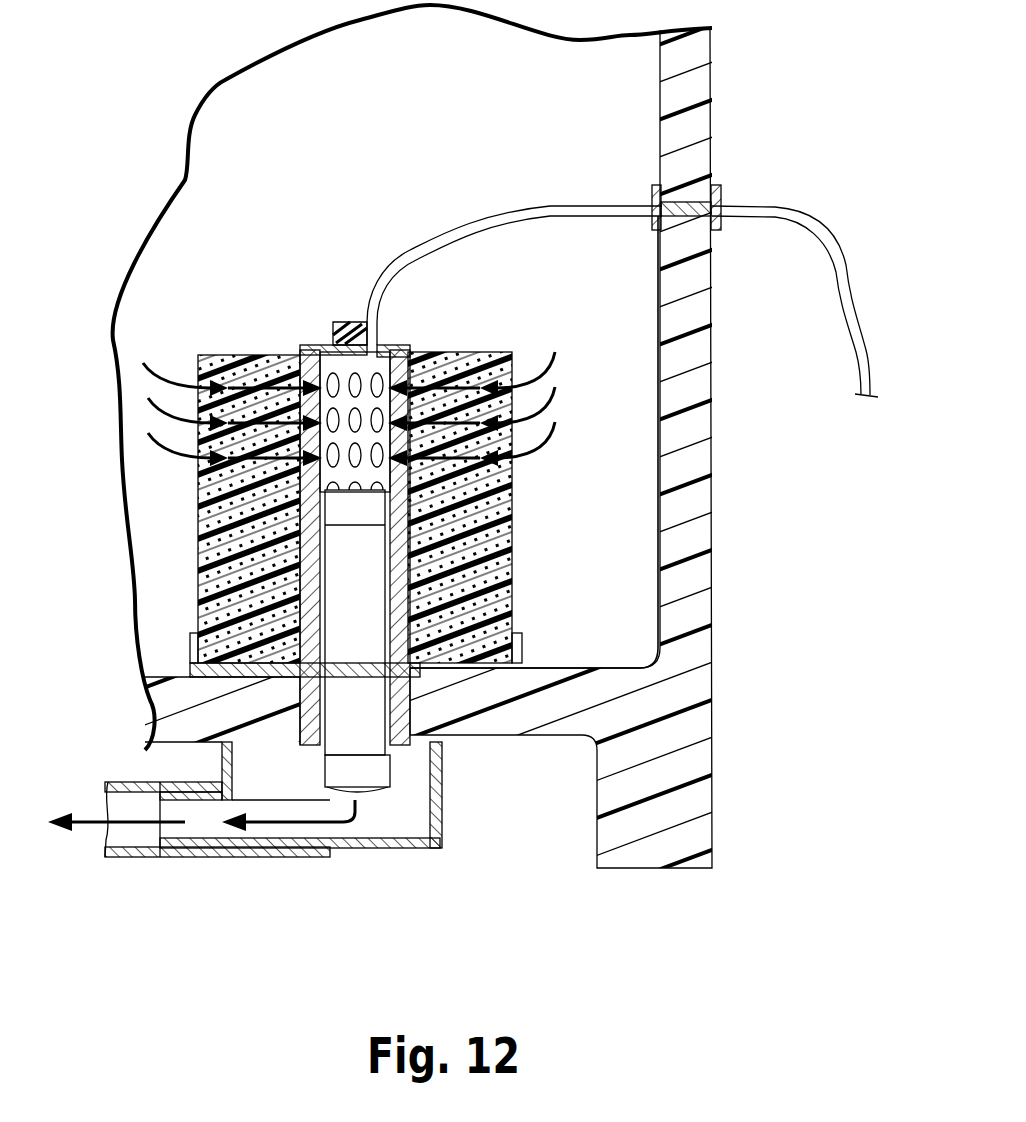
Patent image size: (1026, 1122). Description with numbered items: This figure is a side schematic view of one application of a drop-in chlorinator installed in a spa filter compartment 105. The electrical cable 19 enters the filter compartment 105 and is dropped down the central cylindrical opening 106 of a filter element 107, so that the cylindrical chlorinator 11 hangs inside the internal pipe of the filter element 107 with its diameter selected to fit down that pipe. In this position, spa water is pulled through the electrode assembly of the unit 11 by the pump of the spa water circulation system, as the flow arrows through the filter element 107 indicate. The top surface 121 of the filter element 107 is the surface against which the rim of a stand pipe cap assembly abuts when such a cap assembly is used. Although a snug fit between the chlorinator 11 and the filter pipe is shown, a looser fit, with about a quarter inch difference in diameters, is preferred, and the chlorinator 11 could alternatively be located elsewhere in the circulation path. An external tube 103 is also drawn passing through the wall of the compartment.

The chlorinator 11 is at (400, 773).
The electrical cable 19 is at (548, 208).
The external tube 103 is at (788, 215).
The filter compartment 105 is at (598, 551).
The central cylindrical opening 106 is at (332, 342).
The filter element 107 is at (476, 352).
The top surface 121 is at (408, 347).